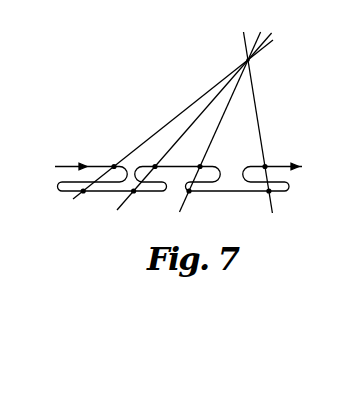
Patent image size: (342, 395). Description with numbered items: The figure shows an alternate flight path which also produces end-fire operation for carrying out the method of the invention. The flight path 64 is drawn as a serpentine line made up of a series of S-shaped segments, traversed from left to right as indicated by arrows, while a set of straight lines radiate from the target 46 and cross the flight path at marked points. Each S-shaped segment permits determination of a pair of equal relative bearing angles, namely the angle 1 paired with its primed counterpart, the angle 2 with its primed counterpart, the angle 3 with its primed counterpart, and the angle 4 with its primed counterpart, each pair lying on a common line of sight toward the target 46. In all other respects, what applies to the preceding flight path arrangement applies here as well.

The target 46 is at (246, 58).
The flight path 64 is at (103, 165).
The relative bearing angle 1 is at (173, 126).
The relative bearing angle 2 is at (194, 124).
The relative bearing angle 3 is at (220, 123).
The relative bearing angle 4 is at (263, 124).